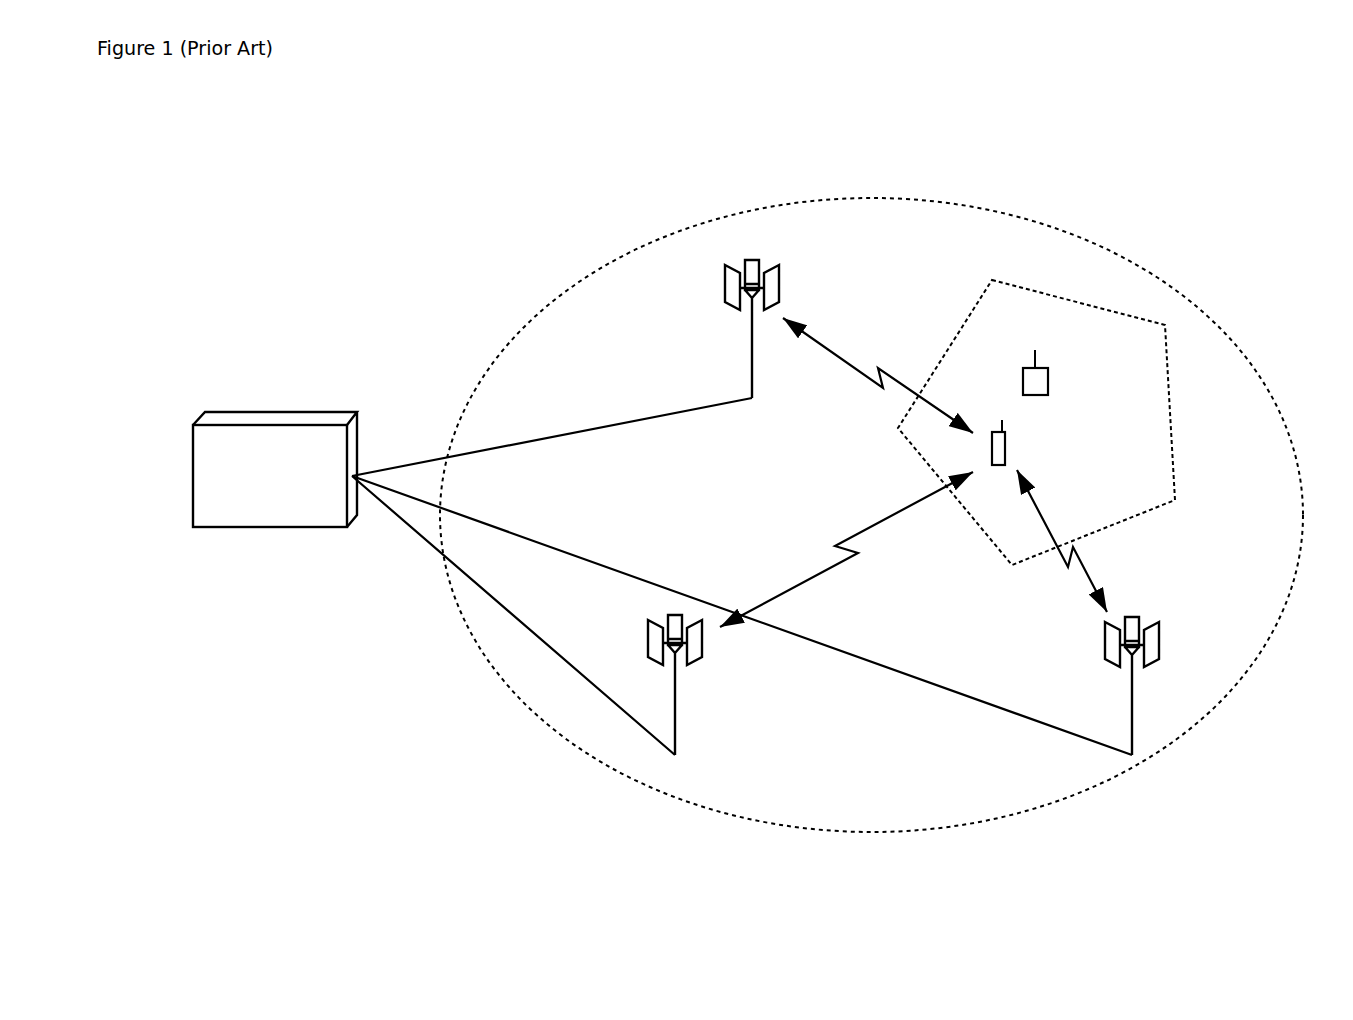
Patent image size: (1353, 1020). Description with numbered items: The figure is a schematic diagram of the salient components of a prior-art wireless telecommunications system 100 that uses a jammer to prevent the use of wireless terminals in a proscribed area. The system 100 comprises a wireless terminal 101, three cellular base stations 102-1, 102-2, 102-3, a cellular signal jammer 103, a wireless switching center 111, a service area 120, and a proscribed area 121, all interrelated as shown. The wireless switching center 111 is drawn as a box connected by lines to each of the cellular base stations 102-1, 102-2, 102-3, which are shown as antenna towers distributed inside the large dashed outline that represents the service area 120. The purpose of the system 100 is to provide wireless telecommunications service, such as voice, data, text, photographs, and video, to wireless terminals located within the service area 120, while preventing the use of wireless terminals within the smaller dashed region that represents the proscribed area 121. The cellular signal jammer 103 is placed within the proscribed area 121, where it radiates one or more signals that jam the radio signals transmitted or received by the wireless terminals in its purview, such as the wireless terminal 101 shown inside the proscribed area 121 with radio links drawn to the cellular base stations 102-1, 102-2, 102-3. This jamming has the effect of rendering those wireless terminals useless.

The wireless telecommunications system 100 is at (715, 504).
The wireless terminal 101 is at (1006, 443).
The cellular base station 102-1 is at (752, 348).
The cellular base station 102-2 is at (675, 727).
The cellular base station 102-3 is at (1132, 690).
The cellular signal jammer 103 is at (1050, 375).
The wireless switching center 111 is at (268, 420).
The service area 120 is at (878, 198).
The proscribed area 121 is at (1177, 413).